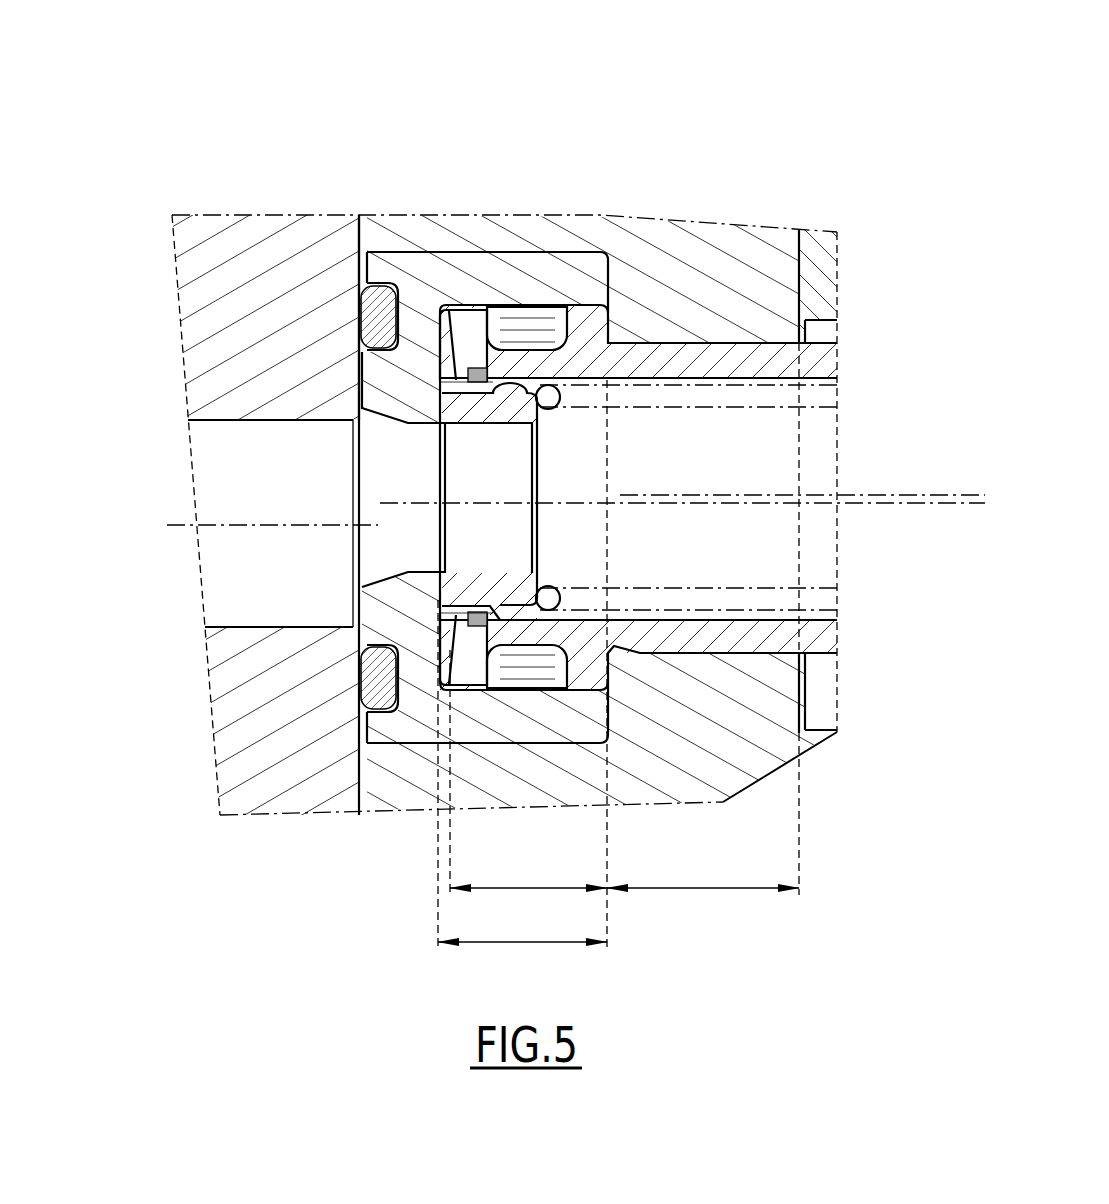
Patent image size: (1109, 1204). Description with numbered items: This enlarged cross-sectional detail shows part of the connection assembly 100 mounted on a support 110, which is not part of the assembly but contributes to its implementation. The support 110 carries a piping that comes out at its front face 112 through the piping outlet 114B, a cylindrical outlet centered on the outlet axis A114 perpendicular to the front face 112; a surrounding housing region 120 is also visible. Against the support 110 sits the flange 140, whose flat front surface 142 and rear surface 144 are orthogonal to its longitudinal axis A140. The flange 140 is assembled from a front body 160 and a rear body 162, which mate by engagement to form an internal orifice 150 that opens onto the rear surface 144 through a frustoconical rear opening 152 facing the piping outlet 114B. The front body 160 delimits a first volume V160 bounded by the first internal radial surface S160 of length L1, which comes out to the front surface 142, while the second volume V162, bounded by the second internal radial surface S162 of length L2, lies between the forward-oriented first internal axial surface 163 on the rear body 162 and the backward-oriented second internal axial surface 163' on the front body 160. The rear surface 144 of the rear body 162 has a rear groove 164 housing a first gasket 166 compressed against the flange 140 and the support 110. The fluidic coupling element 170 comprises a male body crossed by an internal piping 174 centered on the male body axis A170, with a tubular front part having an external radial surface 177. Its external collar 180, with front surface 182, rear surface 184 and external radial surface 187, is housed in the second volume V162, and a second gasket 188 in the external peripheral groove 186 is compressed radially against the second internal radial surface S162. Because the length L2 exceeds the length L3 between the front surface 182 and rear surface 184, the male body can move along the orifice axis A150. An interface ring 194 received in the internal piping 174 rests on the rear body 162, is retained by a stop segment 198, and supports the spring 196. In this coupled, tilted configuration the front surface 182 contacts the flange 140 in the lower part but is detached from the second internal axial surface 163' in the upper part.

The connection assembly 100 is at (851, 78).
The support 110 is at (268, 252).
The front face 112 is at (373, 215).
The piping outlet 114B is at (257, 570).
The second housing part 120 is at (815, 264).
The flange 140 is at (697, 106).
The front surface 142 is at (801, 288).
The rear surface 144 is at (356, 270).
The internal orifice 150 is at (479, 471).
The rear opening 152 is at (356, 438).
The front body 160 is at (625, 255).
The rear body 162 is at (572, 275).
The first internal axial surface 163 is at (467, 369).
The second internal axial surface 163' is at (510, 225).
The rear groove 164 is at (376, 310).
The first gasket 166 is at (593, 330).
The fluidic coupling element 170 is at (815, 630).
The internal piping 174 is at (756, 440).
The external radial surface 177 is at (722, 342).
The external collar 180 is at (586, 678).
The front surface 182 is at (609, 678).
The rear surface 184 is at (439, 662).
The external peripheral groove 186 is at (523, 672).
The external radial surface 187 is at (575, 692).
The second gasket 188 is at (495, 692).
The interface ring 194 is at (460, 405).
The spring 196 is at (815, 389).
The stop segment 198 is at (455, 383).
The outlet axis A114 is at (95, 524).
The longitudinal axis A140 is at (882, 503).
The orifice axis A150 is at (922, 500).
The male body axis A170 is at (858, 495).
The first internal radial surface S160 is at (707, 348).
The second internal radial surface S162 is at (450, 313).
The first volume V160 is at (777, 342).
The second volume V162 is at (576, 316).
The length L1 is at (703, 913).
The length L2 is at (525, 968).
The length L3 is at (528, 913).